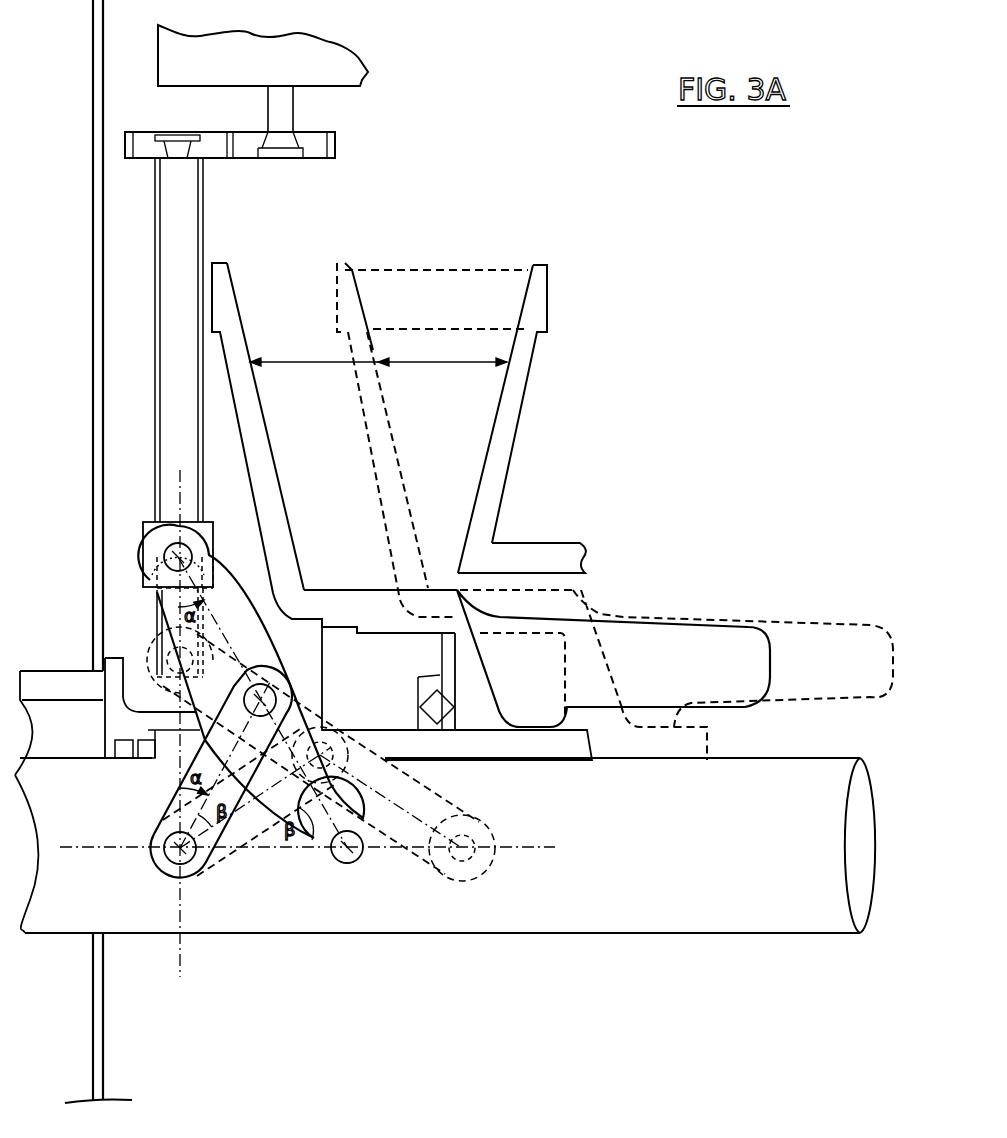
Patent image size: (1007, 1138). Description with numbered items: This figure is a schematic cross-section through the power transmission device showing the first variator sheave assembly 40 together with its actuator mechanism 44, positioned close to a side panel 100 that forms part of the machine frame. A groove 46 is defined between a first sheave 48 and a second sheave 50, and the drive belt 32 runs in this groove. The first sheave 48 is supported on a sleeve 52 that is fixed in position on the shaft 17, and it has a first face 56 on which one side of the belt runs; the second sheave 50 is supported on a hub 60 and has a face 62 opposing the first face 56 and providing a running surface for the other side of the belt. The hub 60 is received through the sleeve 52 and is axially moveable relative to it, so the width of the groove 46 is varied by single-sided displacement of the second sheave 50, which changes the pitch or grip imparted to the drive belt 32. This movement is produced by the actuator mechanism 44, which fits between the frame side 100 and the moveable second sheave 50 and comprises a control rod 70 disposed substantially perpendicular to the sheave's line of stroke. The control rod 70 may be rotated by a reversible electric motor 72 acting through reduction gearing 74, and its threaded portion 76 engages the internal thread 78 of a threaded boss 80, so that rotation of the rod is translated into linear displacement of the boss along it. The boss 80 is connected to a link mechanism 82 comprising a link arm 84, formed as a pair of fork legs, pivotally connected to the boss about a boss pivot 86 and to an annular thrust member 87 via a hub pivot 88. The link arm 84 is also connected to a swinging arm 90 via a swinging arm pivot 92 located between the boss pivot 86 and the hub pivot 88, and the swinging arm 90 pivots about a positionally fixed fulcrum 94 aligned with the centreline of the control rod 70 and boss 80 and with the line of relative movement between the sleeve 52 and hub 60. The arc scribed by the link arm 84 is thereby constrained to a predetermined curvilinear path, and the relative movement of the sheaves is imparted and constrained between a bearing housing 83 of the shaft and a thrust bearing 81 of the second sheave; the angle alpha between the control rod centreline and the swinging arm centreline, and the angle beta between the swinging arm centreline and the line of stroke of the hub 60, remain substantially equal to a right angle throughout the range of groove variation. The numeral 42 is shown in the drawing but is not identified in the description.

The shaft 17 is at (552, 887).
The drive belt 32 is at (401, 283).
The first variator sheave assembly 40 is at (590, 460).
The support plate position 42 is at (684, 744).
The actuator mechanism 44 is at (122, 348).
The groove 46 is at (378, 351).
The first sheave 48 is at (540, 306).
The second sheave 50 is at (333, 292).
The sleeve 52 is at (576, 566).
The first face 56 is at (496, 433).
The hub 60 is at (746, 650).
The face 62 is at (374, 471).
The control rod 70 is at (168, 202).
The reversible electric motor 72 is at (344, 64).
The reduction gearing 74 is at (323, 147).
The threaded portion 76 is at (152, 542).
The internal thread 78 is at (210, 523).
The threaded boss 80 is at (147, 560).
The thrust bearing 81 is at (435, 703).
The link mechanism 82 is at (267, 862).
The bearing housing 83 is at (46, 680).
The link arm 84 is at (358, 870).
The boss pivot 86 is at (147, 553).
The annular thrust member 87 is at (345, 648).
The hub pivot 88 is at (341, 873).
The swinging arm 90 is at (178, 774).
The swinging arm pivot 92 is at (262, 699).
The fulcrum 94 is at (166, 866).
The side panel 100 is at (95, 576).